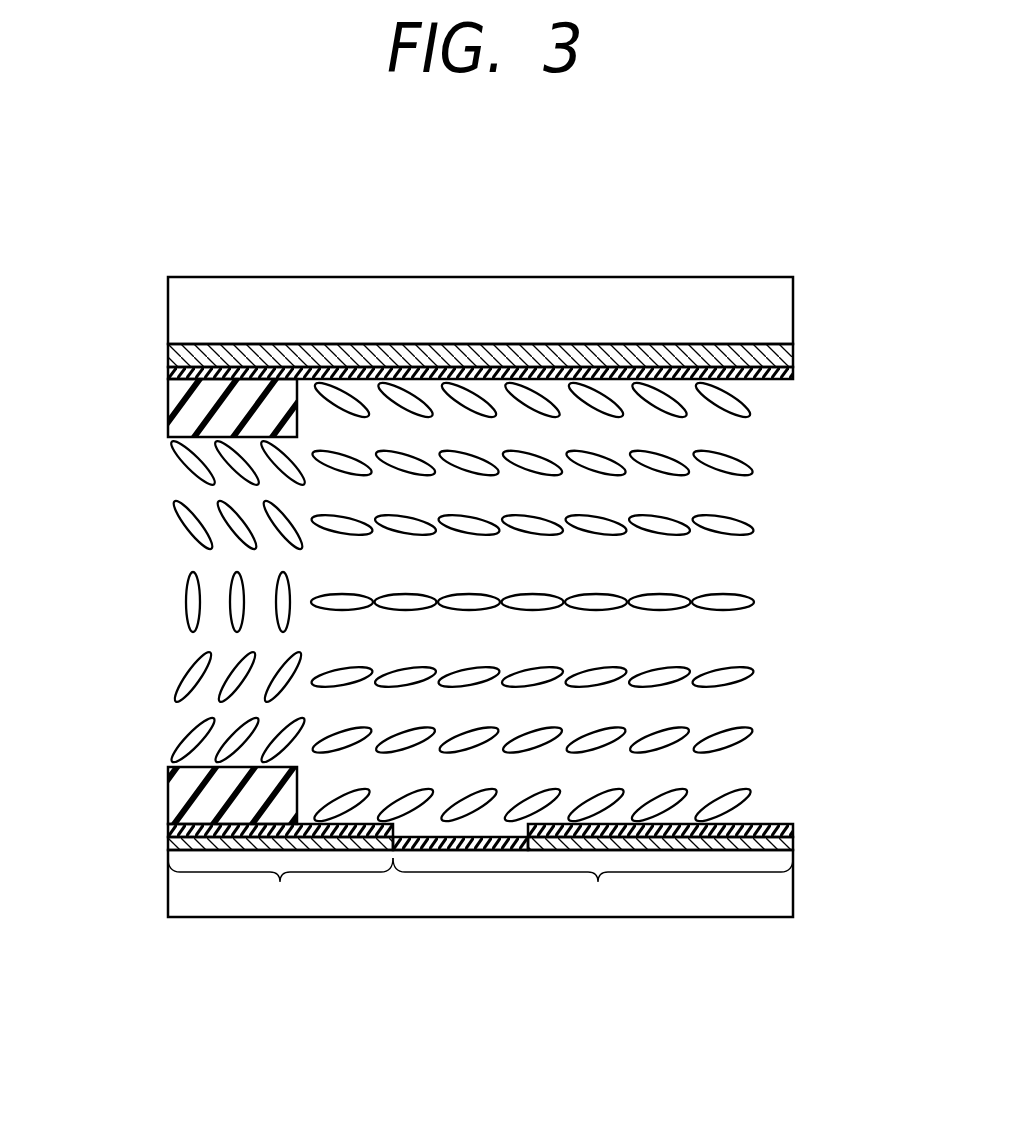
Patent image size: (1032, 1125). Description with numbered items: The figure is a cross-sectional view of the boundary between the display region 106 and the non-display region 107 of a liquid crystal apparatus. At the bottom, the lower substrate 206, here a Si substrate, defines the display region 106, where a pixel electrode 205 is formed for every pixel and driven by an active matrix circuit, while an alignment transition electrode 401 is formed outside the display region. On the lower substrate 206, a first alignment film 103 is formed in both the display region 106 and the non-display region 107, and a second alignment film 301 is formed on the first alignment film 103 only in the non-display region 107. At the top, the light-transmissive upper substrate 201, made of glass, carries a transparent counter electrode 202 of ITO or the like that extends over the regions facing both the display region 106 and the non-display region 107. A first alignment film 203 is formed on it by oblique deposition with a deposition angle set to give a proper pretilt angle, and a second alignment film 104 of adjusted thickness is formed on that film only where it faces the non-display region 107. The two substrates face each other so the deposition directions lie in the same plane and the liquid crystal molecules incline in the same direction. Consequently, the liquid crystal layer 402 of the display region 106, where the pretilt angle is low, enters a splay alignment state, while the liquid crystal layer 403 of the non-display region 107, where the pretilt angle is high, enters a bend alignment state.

The upper substrate 201 is at (232, 292).
The counter electrode 202 is at (768, 350).
The first alignment film 203 is at (765, 380).
The second alignment film 104 is at (175, 403).
The liquid crystal layer of the display region 402 is at (758, 626).
The liquid crystal layer of the non-display region 403 is at (207, 610).
The second alignment film 301 is at (173, 793).
The first alignment film 103 is at (170, 827).
The alignment transition electrode 401 is at (200, 842).
The pixel electrode 205 is at (750, 842).
The lower substrate 206 is at (738, 895).
The non-display region 107 is at (280, 882).
The display region 106 is at (598, 882).